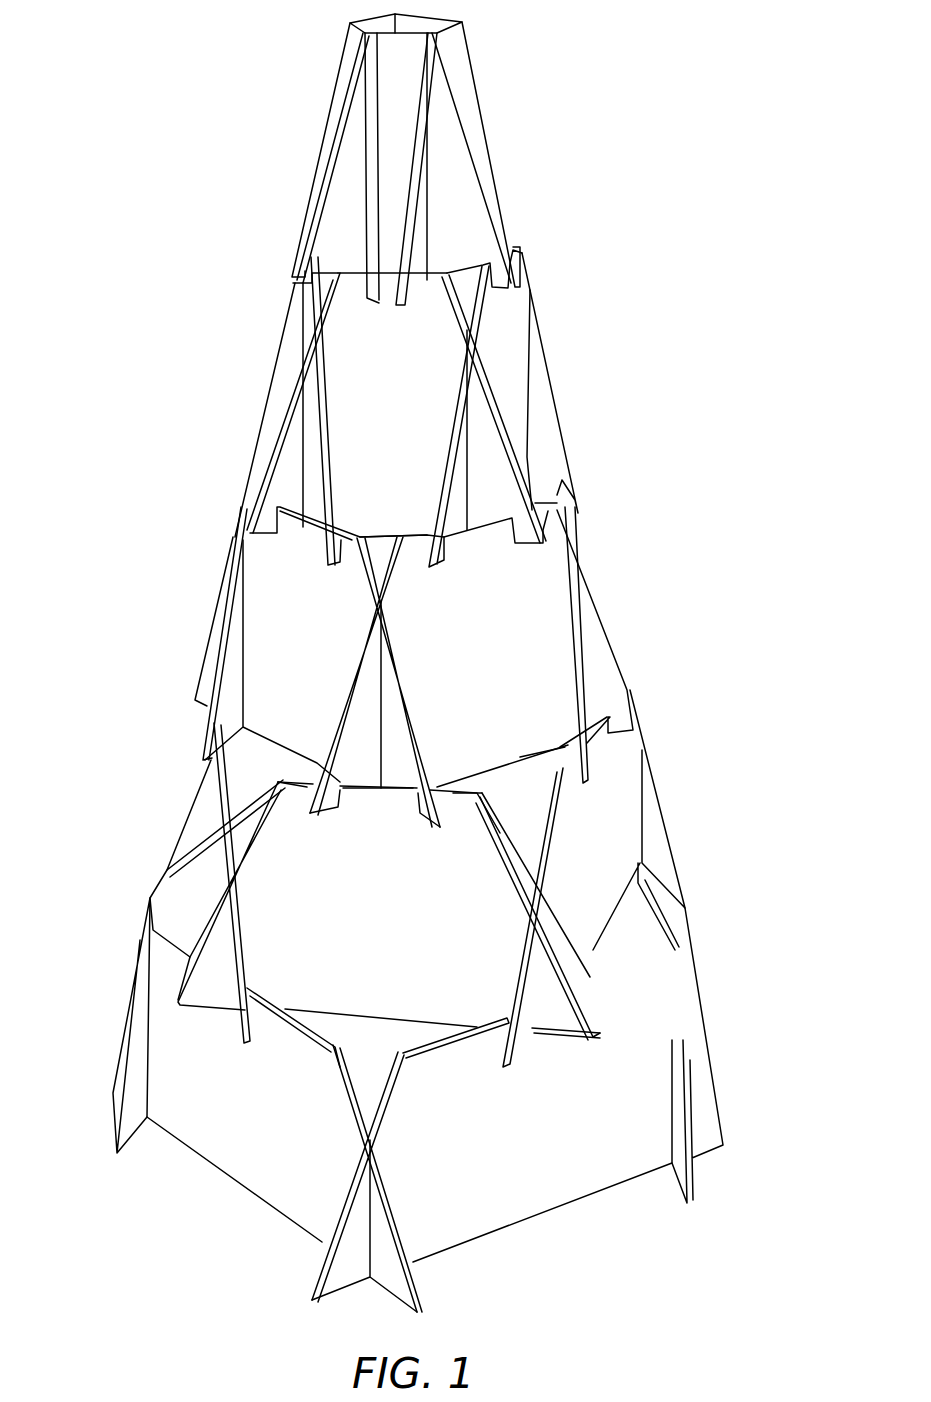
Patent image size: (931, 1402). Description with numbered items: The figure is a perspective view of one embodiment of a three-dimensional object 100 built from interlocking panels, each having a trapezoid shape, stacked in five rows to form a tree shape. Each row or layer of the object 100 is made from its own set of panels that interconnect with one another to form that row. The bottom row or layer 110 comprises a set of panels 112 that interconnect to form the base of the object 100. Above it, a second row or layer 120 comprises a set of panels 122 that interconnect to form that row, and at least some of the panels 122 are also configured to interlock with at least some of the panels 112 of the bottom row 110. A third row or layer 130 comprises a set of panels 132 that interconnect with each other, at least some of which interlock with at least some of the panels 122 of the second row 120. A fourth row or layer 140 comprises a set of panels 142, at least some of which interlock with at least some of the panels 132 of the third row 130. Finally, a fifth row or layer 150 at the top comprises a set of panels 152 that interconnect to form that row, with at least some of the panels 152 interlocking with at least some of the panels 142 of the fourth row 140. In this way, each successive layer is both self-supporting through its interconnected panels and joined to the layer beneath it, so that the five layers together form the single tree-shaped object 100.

The three-dimensional object 100 is at (128, 448).
The bottom row or layer 110 is at (709, 1053).
The set of panels 112 is at (545, 1183).
The second row or layer 120 is at (666, 788).
The set of panels 122 is at (278, 853).
The third row or layer 130 is at (612, 611).
The set of panels 132 is at (258, 623).
The fourth row or layer 140 is at (556, 366).
The set of panels 142 is at (352, 378).
The fifth row or layer 150 is at (500, 134).
The set of panels 152 is at (330, 197).